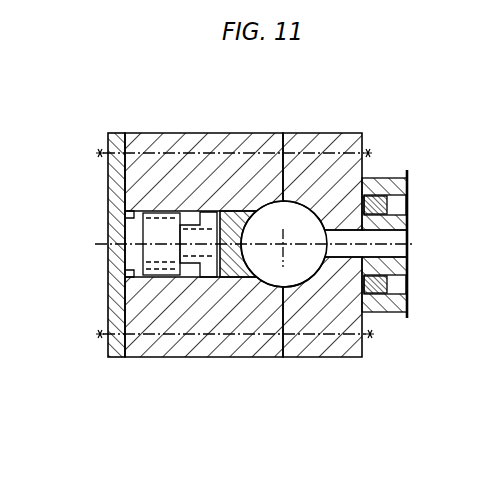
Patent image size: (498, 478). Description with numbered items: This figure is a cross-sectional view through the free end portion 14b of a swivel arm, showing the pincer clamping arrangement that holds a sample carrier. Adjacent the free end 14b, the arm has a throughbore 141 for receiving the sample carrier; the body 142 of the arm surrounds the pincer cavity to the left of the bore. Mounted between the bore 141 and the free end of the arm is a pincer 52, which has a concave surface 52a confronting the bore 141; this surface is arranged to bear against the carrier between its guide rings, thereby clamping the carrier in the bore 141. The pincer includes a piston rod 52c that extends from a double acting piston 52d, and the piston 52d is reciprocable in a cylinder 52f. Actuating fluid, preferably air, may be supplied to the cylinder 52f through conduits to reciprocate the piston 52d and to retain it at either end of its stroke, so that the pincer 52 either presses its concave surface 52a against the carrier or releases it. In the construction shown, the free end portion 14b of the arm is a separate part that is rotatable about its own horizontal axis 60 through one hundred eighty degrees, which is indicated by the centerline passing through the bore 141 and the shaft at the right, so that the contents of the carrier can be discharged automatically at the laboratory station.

The free end of the swivel arm 14b is at (163, 136).
The swivel arm body adjacent the bore 142 is at (222, 153).
The throughbore 141 is at (298, 202).
The pincer 52 is at (254, 265).
The concave surface 52a is at (249, 224).
The piston rod 52c is at (192, 250).
The double acting piston 52d is at (143, 254).
The cylinder 52f is at (128, 213).
The horizontal axis 60 is at (395, 247).